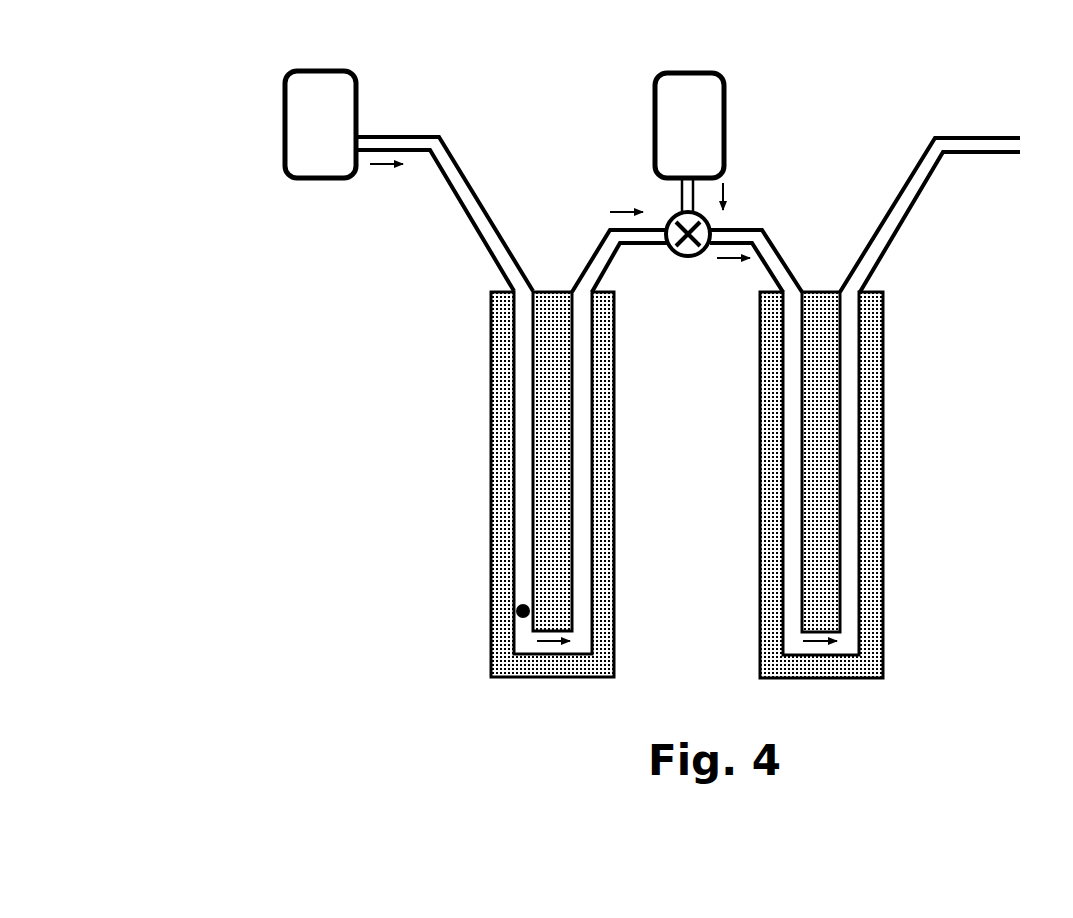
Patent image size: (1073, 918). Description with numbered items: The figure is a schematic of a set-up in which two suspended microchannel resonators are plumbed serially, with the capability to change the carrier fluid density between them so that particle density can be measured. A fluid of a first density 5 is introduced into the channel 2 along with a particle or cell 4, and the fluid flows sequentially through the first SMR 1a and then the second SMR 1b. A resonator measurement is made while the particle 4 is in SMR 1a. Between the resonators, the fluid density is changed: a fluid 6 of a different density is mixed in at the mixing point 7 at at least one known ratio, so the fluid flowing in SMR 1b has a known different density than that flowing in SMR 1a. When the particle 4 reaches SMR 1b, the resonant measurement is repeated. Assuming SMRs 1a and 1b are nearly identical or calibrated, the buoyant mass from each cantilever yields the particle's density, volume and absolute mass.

The first SMR 1a is at (492, 402).
The second SMR 1b is at (868, 493).
The channel 2 is at (482, 225).
The particle 4 is at (523, 611).
The fluid of a first density 5 is at (292, 163).
The fluid of a different density 6 is at (710, 93).
The mixing point 7 is at (718, 230).